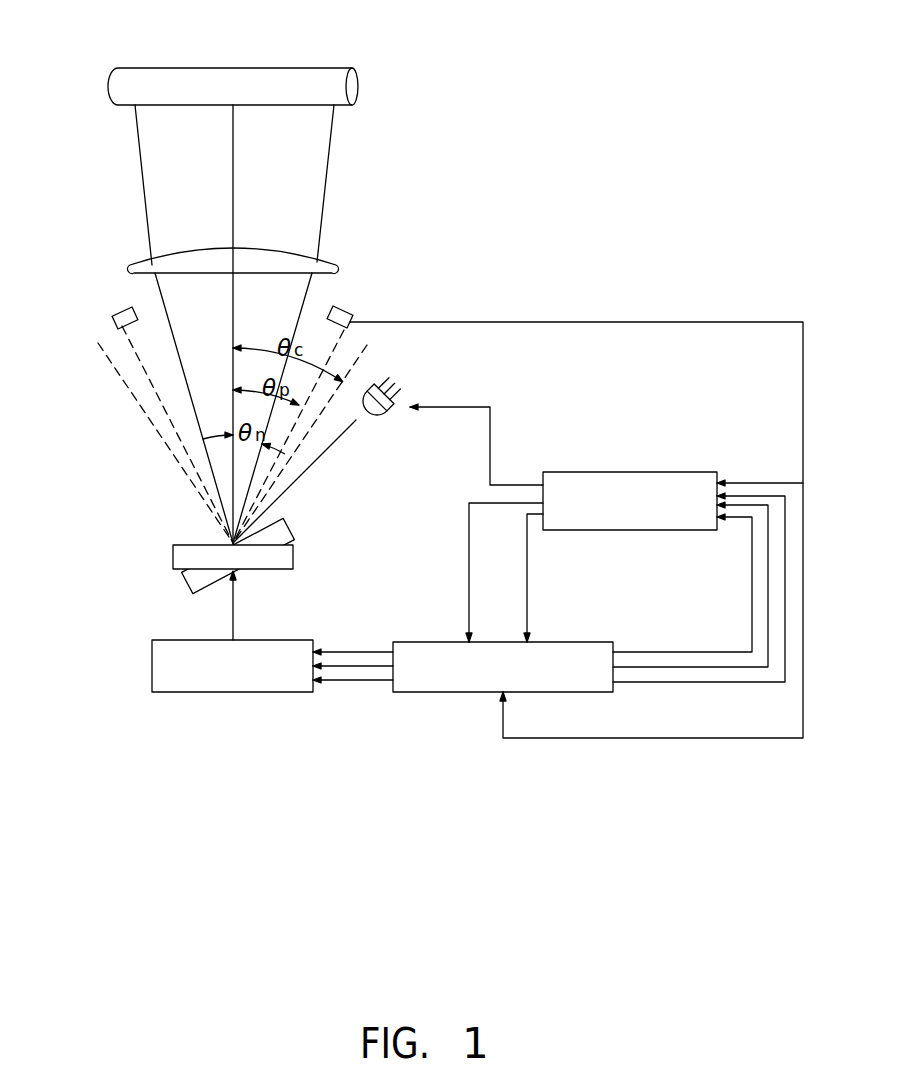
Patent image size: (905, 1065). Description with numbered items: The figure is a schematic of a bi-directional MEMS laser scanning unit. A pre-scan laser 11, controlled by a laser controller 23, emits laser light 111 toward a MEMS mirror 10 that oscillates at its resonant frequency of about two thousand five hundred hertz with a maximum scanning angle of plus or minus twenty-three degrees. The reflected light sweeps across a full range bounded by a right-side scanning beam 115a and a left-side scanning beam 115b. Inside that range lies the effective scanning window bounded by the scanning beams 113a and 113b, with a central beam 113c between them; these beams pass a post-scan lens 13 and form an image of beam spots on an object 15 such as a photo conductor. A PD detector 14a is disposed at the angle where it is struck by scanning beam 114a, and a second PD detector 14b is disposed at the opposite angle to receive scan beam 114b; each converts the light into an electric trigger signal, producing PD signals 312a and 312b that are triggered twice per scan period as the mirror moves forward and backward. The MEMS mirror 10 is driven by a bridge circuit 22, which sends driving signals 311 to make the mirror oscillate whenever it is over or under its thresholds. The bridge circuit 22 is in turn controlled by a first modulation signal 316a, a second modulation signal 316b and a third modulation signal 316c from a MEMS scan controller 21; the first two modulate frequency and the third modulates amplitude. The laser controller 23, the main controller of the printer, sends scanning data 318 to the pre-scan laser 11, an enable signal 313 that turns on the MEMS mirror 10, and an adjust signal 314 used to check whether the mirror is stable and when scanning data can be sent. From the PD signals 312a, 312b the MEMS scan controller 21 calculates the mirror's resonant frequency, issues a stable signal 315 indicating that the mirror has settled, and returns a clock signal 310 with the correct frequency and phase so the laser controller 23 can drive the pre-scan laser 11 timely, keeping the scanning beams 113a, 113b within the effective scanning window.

The MEMS mirror 10 is at (173, 557).
The pre-scan laser 11 is at (392, 412).
The post-scan lens 13 is at (318, 263).
The PD detector 14a is at (347, 306).
The PD detector 14b is at (118, 308).
The object 15 is at (292, 82).
The MEMS scan controller 21 is at (424, 642).
The bridge circuit 22 is at (152, 663).
The laser controller 23 is at (655, 472).
The laser light 111 is at (312, 468).
The scanning beam 113a is at (313, 290).
The scanning beam 113b is at (160, 290).
The central light beam 113c is at (225, 282).
The scanning beam 114a is at (330, 340).
The scan beam 114b is at (145, 355).
The right-side scanning beam 115a is at (367, 358).
The left-side scanning beam 115b is at (155, 430).
The clock signal 310 is at (663, 683).
The driving signals 311 is at (233, 612).
The PD signal 312a is at (503, 720).
The PD signal 312b is at (757, 408).
The enable signal 313 is at (527, 568).
The adjust signal 314 is at (469, 545).
The stable signal 315 is at (638, 652).
The first modulation signal 316a is at (700, 652).
The second modulation signal 316b is at (375, 667).
The third modulation signal 316c is at (335, 681).
The scanning data 318 is at (492, 420).